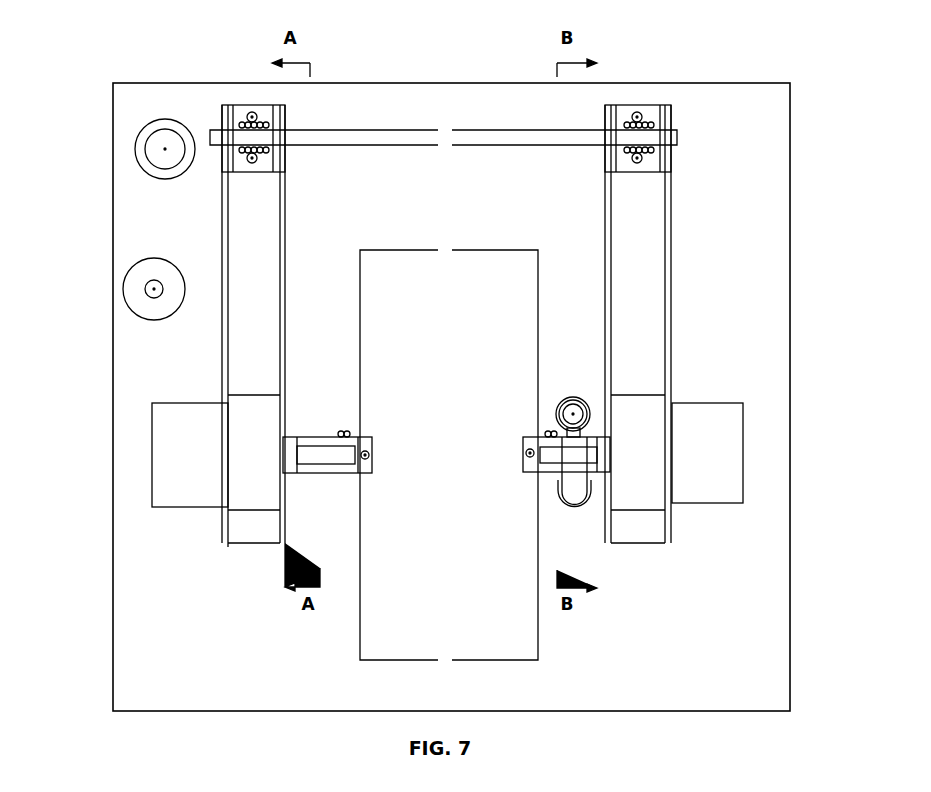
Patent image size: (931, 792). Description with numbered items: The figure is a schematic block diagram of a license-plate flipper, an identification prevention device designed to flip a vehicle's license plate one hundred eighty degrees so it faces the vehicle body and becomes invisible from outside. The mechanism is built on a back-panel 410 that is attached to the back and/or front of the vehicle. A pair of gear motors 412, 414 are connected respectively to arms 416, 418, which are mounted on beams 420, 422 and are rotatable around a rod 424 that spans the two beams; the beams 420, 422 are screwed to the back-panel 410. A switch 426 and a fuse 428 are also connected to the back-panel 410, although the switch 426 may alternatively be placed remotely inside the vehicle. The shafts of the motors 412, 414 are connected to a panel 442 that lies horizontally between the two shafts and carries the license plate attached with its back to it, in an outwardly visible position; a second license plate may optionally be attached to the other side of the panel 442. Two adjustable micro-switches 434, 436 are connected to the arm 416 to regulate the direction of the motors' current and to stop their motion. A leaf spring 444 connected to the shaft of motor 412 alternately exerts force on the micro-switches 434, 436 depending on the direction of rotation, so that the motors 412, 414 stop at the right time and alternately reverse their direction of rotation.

The back-panel 410 is at (760, 83).
The gear motor 412 is at (720, 503).
The gear motor 414 is at (170, 507).
The arm 416 is at (670, 265).
The arm 418 is at (287, 272).
The beam 420 is at (628, 105).
The beam 422 is at (240, 105).
The rod 424 is at (317, 130).
The switch 426 is at (133, 312).
The fuse 428 is at (142, 130).
The adjustable micro-switch 434 is at (560, 403).
The adjustable micro-switch 436 is at (560, 507).
The panel 442 is at (495, 250).
The leaf spring 444 is at (562, 477).